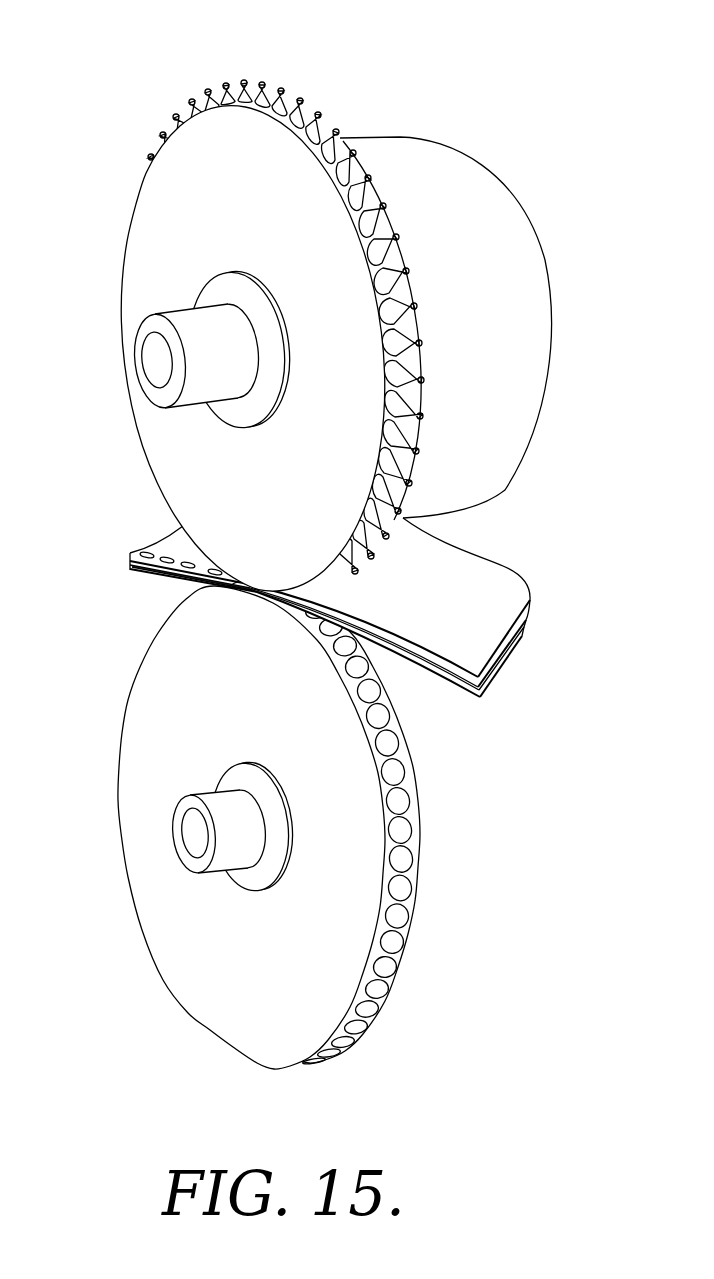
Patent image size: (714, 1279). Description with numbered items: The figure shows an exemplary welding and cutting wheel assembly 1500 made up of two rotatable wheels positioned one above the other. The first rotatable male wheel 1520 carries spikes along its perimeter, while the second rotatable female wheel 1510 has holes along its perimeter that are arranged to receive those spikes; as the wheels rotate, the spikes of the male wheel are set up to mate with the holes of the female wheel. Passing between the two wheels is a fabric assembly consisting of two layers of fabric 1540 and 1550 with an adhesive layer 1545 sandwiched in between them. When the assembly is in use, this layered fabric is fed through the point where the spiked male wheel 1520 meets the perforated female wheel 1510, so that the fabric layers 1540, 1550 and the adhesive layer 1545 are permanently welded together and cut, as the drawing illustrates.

The welding and cutting wheel assembly 1500 is at (318, 538).
The second rotatable female wheel 1510 is at (142, 932).
The first rotatable male wheel 1520 is at (124, 231).
The layer of fabric 1540 is at (503, 583).
The adhesive layer 1545 is at (505, 668).
The layer of fabric 1550 is at (437, 676).